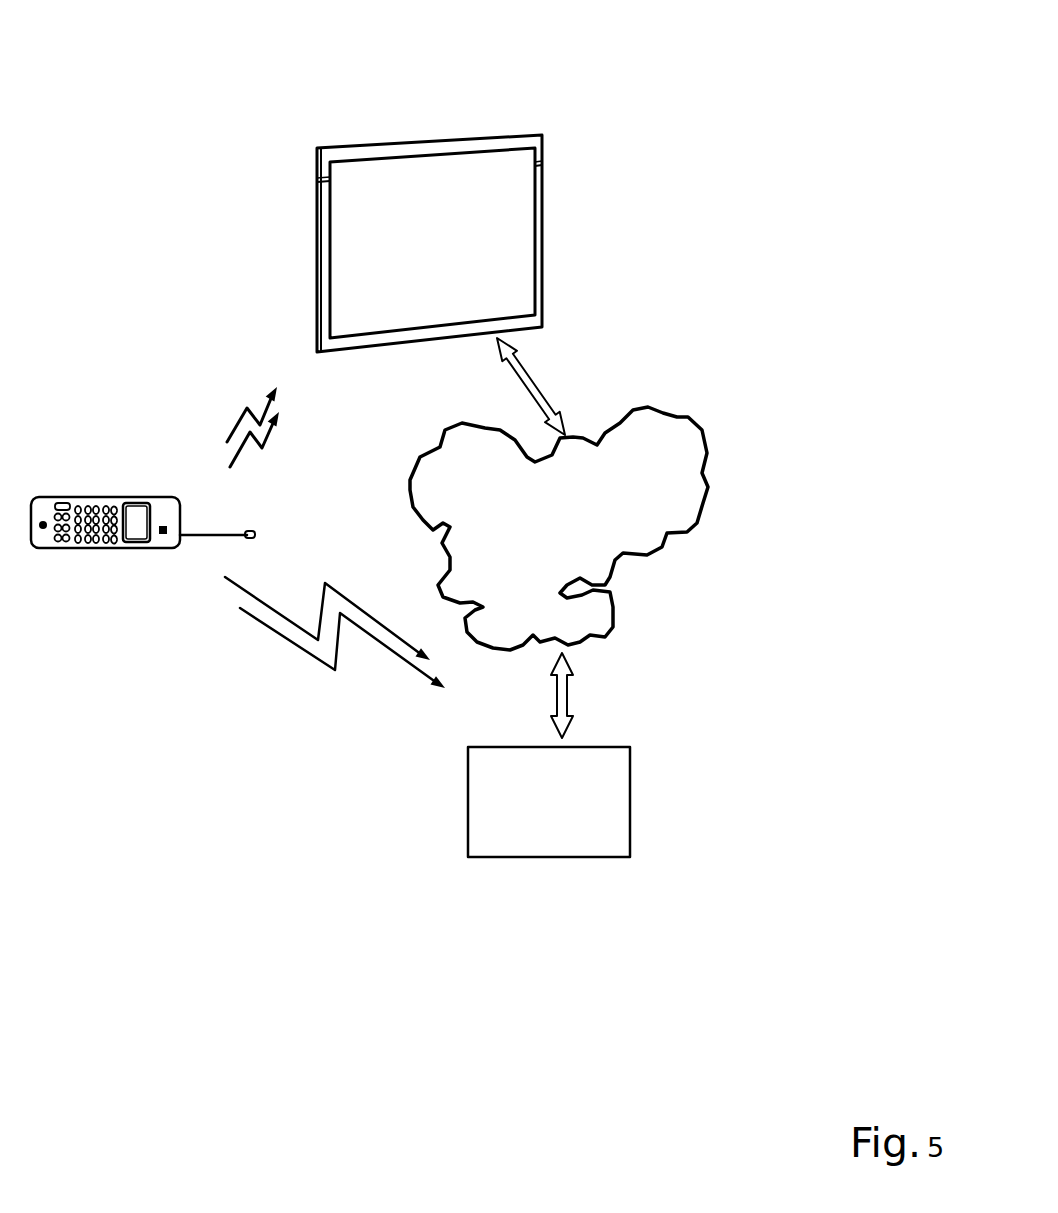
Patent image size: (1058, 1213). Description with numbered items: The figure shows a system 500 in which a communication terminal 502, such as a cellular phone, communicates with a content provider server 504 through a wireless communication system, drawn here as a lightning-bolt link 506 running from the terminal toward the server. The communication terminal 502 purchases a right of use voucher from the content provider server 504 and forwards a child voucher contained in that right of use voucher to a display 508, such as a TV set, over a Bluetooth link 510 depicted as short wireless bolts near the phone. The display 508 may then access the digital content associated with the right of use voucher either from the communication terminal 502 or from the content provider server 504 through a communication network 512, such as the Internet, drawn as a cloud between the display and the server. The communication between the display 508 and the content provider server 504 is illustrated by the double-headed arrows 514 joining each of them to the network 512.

The system 500 is at (262, 151).
The communication terminal 502 is at (158, 498).
The content provider server 504 is at (612, 810).
The communication link 506 is at (286, 668).
The display 508 is at (497, 137).
The Bluetooth link 510 is at (200, 388).
The communication network 512 is at (683, 460).
The arrows 514 is at (530, 380).